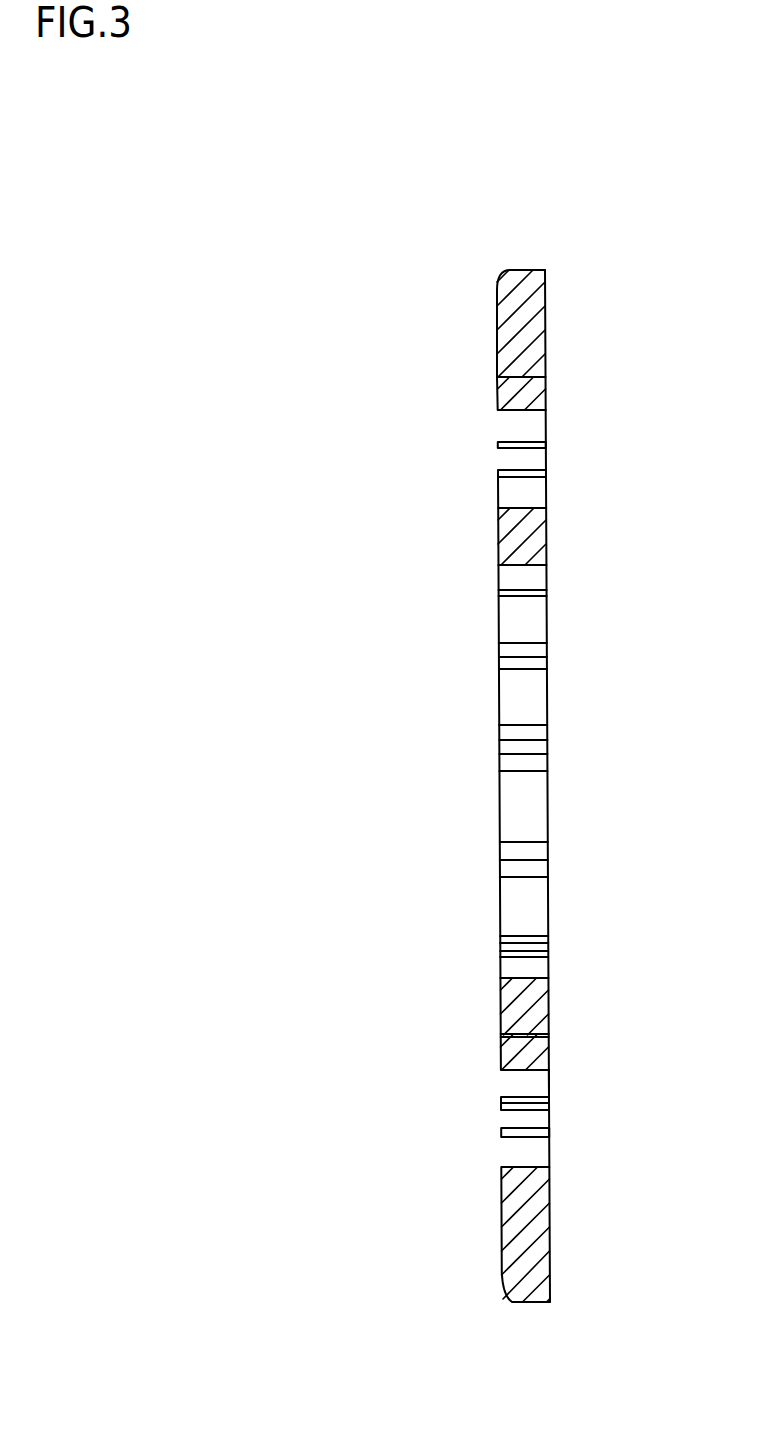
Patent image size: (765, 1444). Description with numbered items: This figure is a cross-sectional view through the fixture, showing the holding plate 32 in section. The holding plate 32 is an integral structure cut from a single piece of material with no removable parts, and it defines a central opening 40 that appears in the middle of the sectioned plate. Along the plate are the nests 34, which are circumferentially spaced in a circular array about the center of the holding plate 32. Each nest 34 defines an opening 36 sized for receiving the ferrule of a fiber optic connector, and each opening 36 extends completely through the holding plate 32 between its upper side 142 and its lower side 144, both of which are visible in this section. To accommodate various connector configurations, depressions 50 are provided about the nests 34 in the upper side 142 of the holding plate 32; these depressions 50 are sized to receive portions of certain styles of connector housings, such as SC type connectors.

The holding plate 32 is at (546, 290).
The upper surface/side 142 is at (497, 320).
The lower surface/side 144 is at (546, 360).
The opening 36 is at (546, 459).
The nest 34 is at (482, 460).
The depression 50 is at (503, 490).
The central opening 40 is at (532, 813).